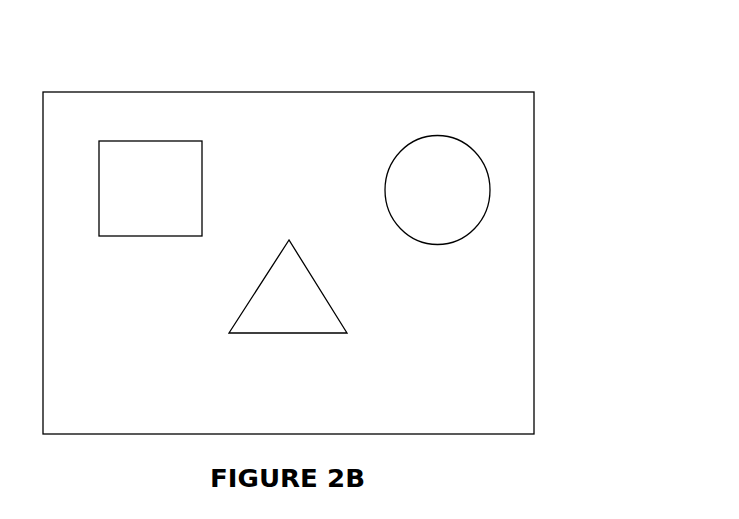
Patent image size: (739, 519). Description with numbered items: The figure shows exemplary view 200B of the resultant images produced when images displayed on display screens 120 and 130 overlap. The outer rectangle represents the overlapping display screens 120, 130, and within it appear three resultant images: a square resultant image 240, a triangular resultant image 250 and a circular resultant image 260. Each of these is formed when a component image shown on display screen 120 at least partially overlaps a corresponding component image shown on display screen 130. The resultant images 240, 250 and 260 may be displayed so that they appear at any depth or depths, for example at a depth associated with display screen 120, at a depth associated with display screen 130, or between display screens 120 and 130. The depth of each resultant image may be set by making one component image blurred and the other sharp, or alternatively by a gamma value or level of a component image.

The exemplary view 200B is at (315, 48).
The display screen 120 is at (534, 155).
The display screen 130 is at (288, 263).
The resultant image 240 is at (172, 200).
The resultant image 250 is at (307, 306).
The resultant image 260 is at (457, 199).